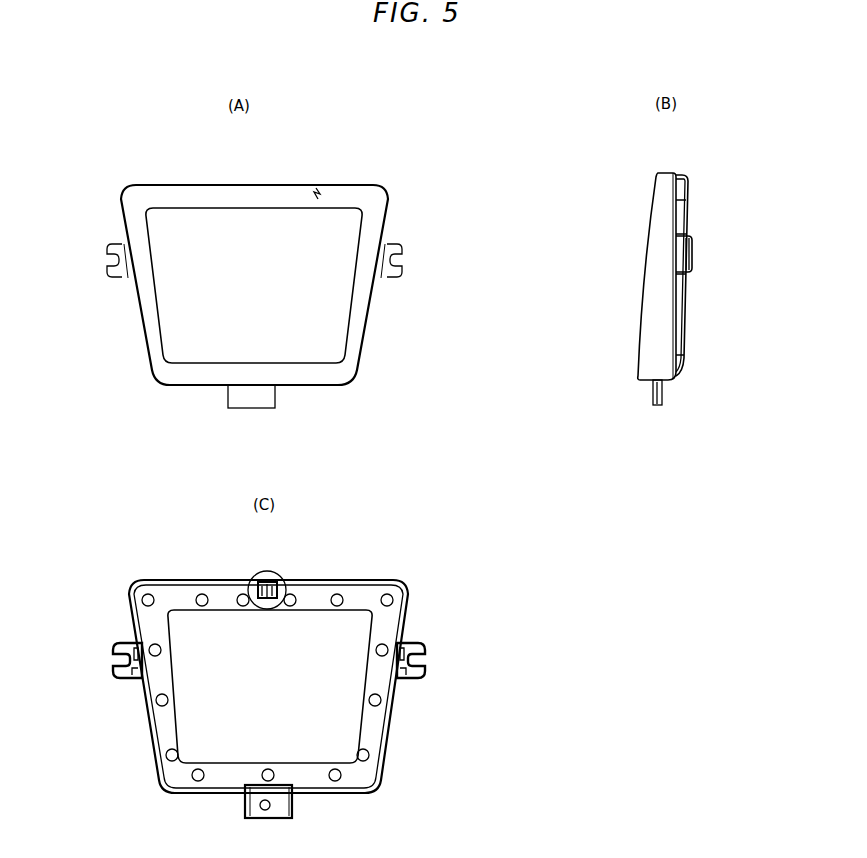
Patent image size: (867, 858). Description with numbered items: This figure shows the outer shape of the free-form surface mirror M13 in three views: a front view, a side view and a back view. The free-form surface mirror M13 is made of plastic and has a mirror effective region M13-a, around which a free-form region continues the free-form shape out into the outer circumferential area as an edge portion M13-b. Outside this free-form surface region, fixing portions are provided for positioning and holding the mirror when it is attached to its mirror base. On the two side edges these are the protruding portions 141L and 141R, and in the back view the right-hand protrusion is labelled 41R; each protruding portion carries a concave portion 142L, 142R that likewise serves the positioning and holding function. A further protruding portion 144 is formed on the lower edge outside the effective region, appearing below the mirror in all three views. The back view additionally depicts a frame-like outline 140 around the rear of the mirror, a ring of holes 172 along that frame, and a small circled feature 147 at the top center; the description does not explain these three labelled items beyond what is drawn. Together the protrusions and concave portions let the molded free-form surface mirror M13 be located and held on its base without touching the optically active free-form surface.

The mirror effective region M13-a is at (250, 285).
The edge portion M13-b is at (315, 185).
The free-form surface mirror M13 is at (630, 392).
The protruding portion 141L is at (120, 244).
The protruding portion 141R is at (390, 244).
The right engaging portion 41R is at (120, 643).
The concave portion 142L is at (110, 262).
The concave portion 142R is at (399, 261).
The protruding portion 144 is at (236, 398).
The frame 140 is at (378, 582).
The fixing holes 172 is at (393, 600).
The positioning portion 147 is at (286, 578).